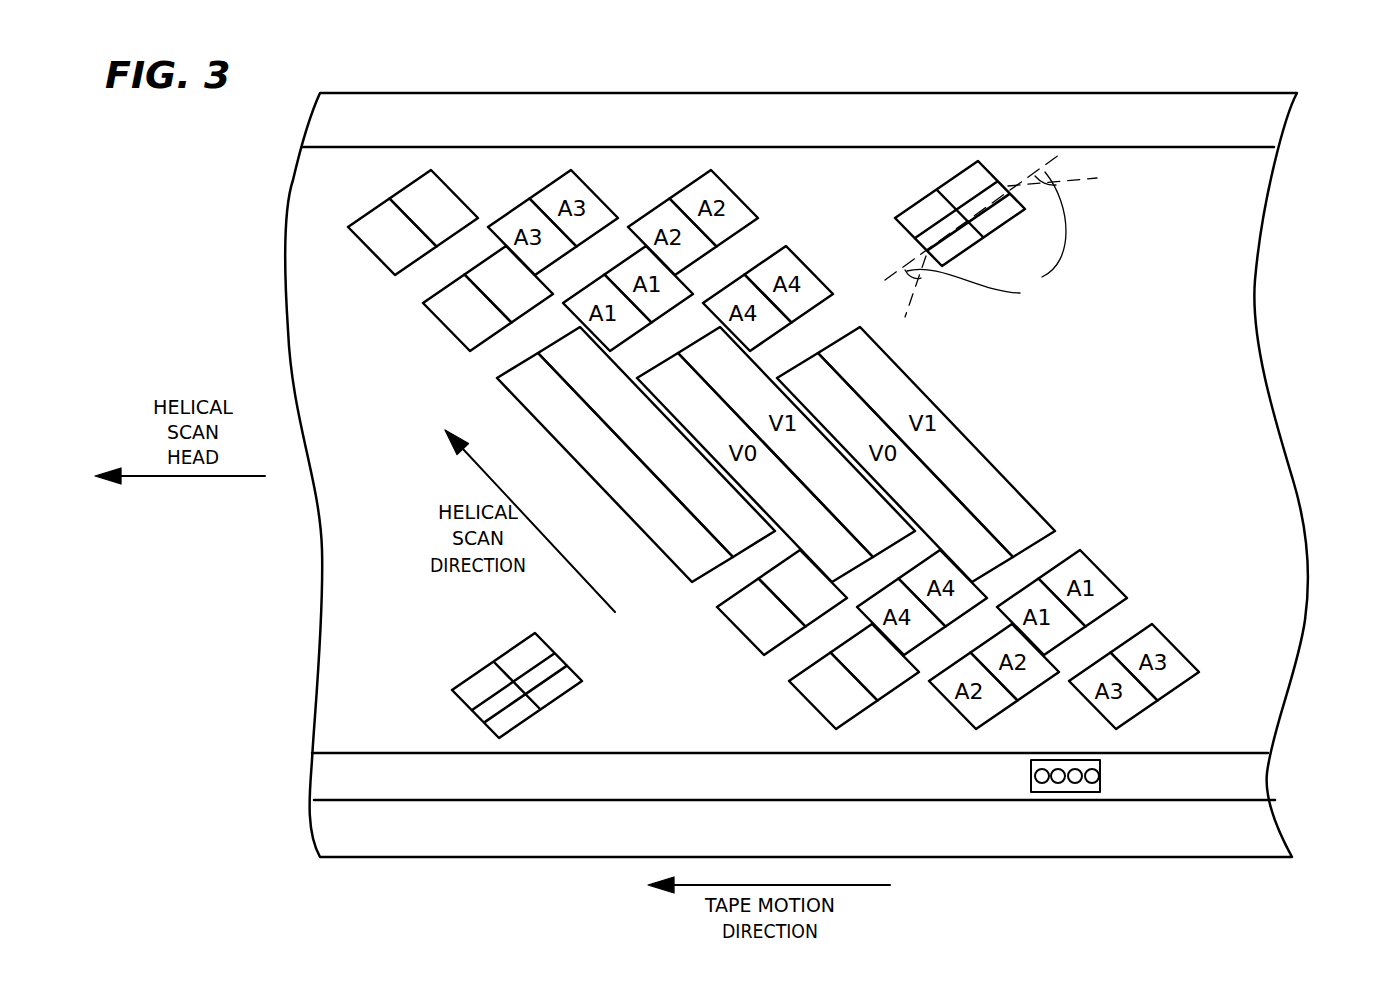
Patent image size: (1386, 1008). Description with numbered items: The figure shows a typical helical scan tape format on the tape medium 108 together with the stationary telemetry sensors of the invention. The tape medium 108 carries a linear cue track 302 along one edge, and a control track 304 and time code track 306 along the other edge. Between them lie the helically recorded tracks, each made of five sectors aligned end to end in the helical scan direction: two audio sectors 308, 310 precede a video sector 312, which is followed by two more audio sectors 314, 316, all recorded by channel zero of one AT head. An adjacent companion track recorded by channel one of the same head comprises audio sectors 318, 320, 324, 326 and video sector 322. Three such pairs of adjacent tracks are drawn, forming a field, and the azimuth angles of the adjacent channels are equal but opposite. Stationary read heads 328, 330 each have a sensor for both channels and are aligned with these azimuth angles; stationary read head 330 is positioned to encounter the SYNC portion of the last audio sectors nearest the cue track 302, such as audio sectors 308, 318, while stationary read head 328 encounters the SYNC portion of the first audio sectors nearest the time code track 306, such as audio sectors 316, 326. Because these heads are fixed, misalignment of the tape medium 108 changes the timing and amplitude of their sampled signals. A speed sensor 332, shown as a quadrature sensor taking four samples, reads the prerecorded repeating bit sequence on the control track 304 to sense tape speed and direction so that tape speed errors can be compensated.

The tape medium 108 is at (1268, 377).
The cue track 302 is at (1247, 122).
The control track 304 is at (1255, 772).
The time code track 306 is at (1255, 828).
The audio sector 308 is at (362, 240).
The audio sector 318 is at (415, 184).
The audio sector 310 is at (453, 336).
The audio sector 320 is at (493, 256).
The video sector 312 is at (632, 508).
The video sector 322 is at (560, 337).
The audio sector 314 is at (755, 640).
The audio sector 324 is at (773, 568).
The audio sector 316 is at (820, 706).
The audio sector 326 is at (889, 684).
The stationary read head 328 is at (463, 662).
The stationary read head 330 is at (903, 180).
The speed sensor 332 is at (1106, 776).